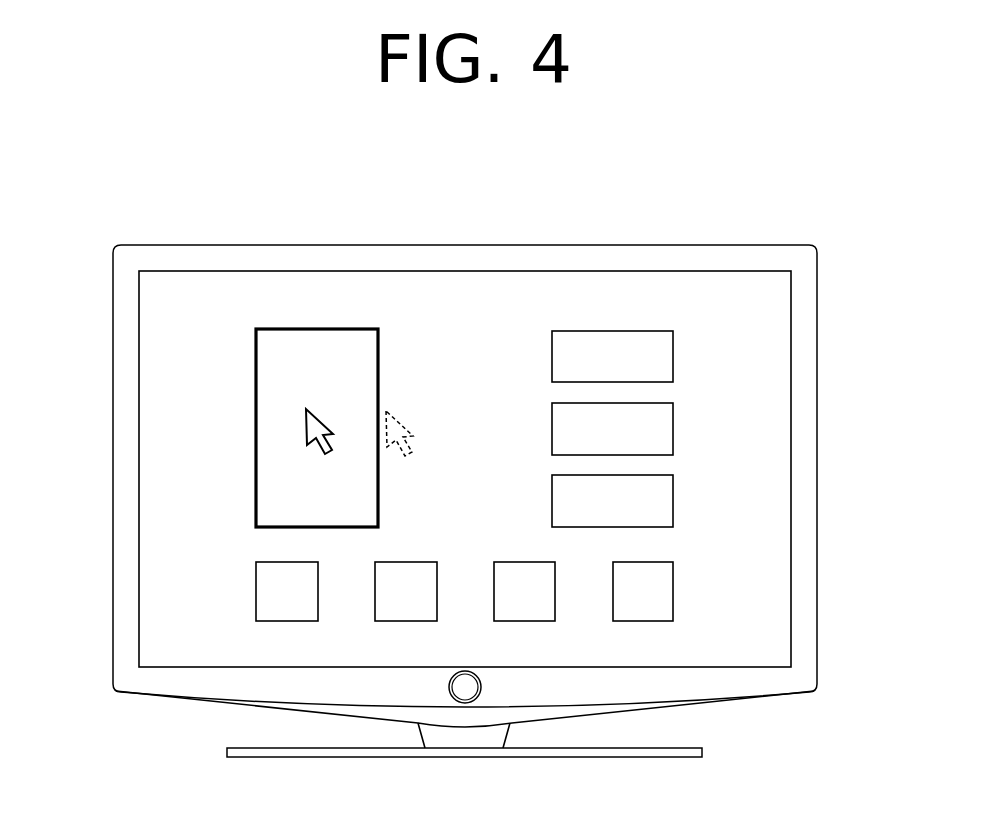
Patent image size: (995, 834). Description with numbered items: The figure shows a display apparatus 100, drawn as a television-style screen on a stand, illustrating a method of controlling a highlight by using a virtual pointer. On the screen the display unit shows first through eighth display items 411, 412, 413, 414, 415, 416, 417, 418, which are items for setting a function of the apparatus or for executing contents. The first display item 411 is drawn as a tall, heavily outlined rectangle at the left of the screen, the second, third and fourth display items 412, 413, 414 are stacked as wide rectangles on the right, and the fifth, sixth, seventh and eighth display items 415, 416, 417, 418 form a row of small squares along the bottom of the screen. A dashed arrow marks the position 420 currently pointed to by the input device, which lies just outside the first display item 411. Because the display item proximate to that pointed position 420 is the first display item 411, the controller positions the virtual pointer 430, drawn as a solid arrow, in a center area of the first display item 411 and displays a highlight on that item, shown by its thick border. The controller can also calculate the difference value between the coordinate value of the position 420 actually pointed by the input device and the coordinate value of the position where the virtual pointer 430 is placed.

The display apparatus 100 is at (722, 245).
The first display item 411 is at (318, 328).
The second display item 412 is at (616, 331).
The third display item 413 is at (673, 428).
The fourth display item 414 is at (673, 500).
The fifth display item 415 is at (285, 621).
The sixth display item 416 is at (407, 621).
The seventh display item 417 is at (525, 621).
The eighth display item 418 is at (643, 621).
The position currently pointed by the input device 420 is at (396, 420).
The virtual pointer 430 is at (306, 424).